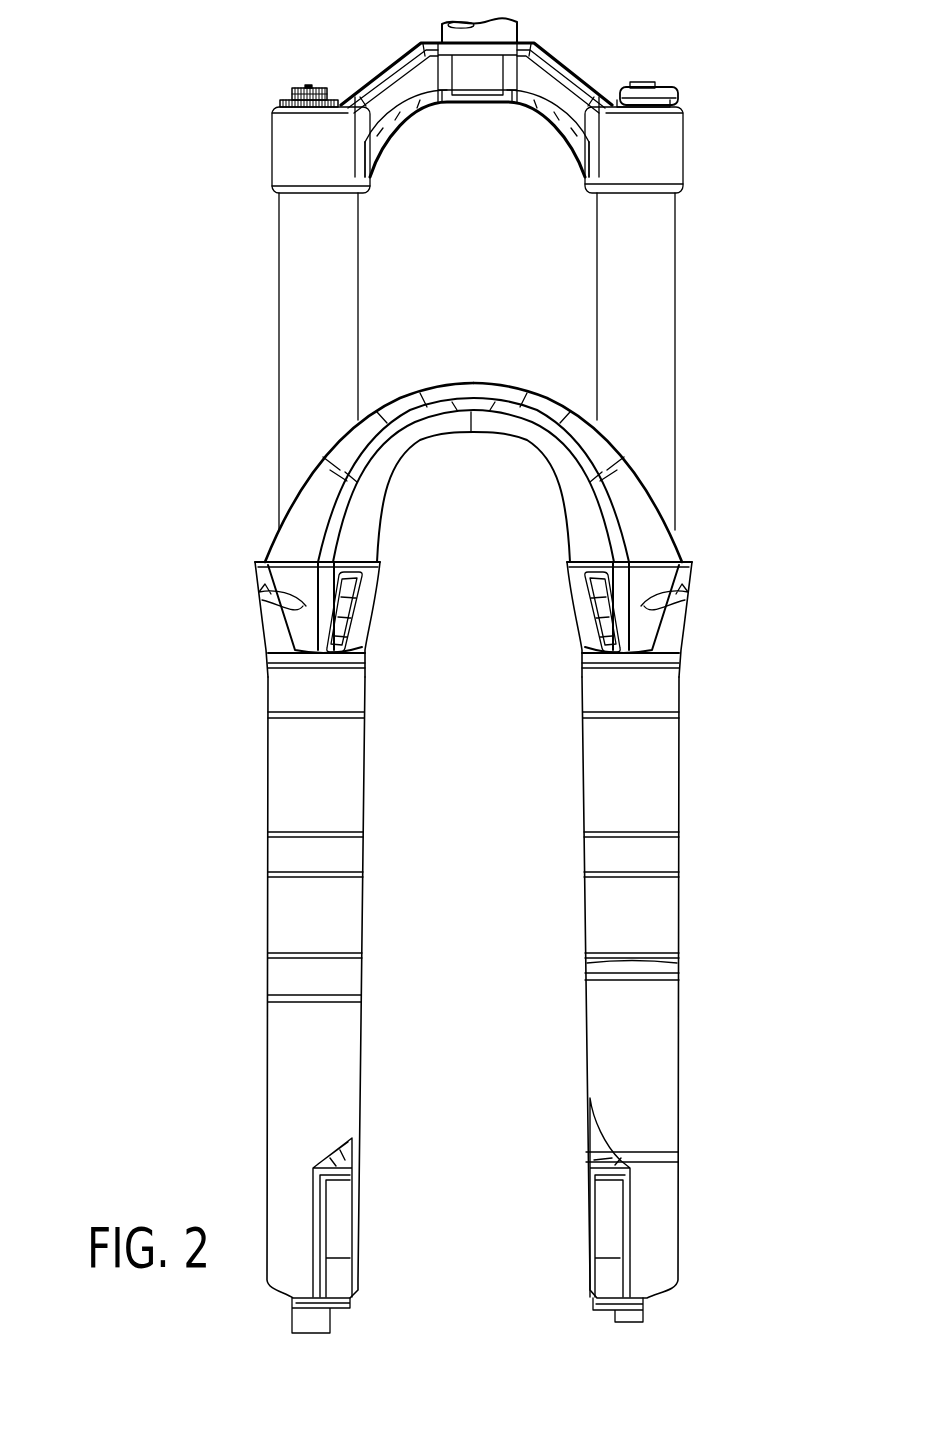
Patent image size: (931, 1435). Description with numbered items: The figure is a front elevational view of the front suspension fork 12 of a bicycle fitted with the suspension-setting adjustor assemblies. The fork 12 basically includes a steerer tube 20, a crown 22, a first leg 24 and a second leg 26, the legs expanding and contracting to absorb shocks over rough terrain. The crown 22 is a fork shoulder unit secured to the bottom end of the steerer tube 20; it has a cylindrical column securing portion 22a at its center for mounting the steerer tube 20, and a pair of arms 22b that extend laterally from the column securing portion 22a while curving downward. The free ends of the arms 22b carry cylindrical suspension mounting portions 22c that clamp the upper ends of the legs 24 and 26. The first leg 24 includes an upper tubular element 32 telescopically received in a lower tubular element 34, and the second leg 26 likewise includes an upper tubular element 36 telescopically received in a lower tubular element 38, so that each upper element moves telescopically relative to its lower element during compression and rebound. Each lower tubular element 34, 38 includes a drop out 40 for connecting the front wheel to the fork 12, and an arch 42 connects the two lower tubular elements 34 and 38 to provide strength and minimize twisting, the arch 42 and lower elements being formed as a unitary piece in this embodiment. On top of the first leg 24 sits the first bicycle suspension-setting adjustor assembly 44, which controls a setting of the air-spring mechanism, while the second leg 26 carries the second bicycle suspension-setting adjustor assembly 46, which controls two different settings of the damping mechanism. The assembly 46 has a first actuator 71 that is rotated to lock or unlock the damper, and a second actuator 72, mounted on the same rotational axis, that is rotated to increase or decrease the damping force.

The front suspension fork 12 is at (248, 313).
The steerer tube 20 is at (530, 28).
The crown 22 is at (590, 62).
The column securing portion 22a is at (483, 75).
The arms 22b is at (393, 107).
The suspension mounting portions 22c is at (292, 155).
The first leg 24 is at (780, 493).
The second leg 26 is at (173, 502).
The upper tubular element 32 is at (675, 470).
The lower tubular element 34 is at (683, 685).
The upper tubular element 36 is at (278, 478).
The lower tubular element 38 is at (267, 690).
The drop out 40 is at (337, 1212).
The arch 42 is at (462, 385).
The first bicycle suspension-setting adjustor assembly 44 is at (694, 80).
The second bicycle suspension-setting adjustor assembly 46 is at (265, 92).
The first actuator 71 is at (318, 94).
The second actuator 72 is at (290, 100).